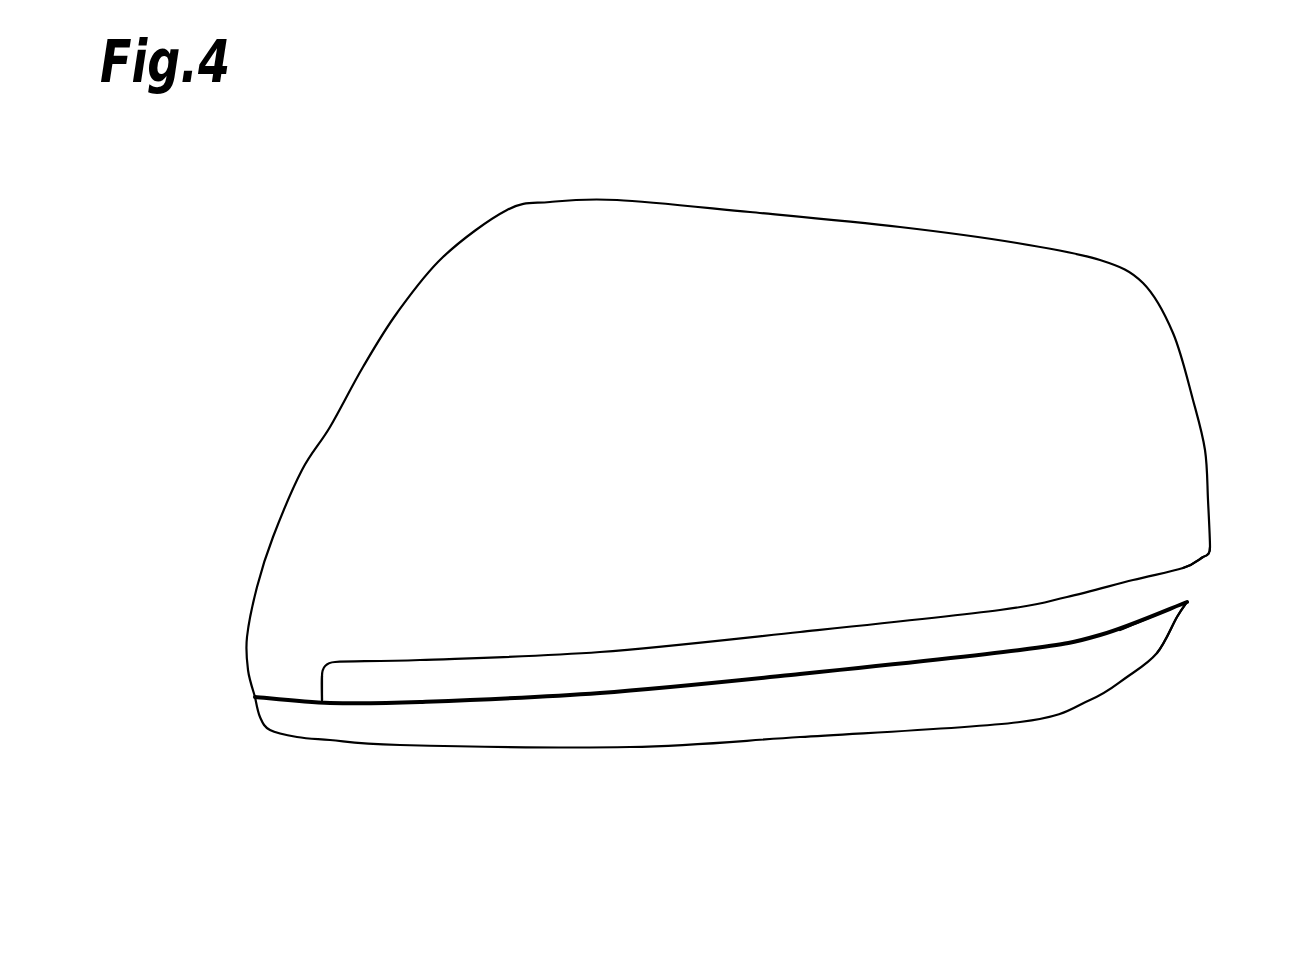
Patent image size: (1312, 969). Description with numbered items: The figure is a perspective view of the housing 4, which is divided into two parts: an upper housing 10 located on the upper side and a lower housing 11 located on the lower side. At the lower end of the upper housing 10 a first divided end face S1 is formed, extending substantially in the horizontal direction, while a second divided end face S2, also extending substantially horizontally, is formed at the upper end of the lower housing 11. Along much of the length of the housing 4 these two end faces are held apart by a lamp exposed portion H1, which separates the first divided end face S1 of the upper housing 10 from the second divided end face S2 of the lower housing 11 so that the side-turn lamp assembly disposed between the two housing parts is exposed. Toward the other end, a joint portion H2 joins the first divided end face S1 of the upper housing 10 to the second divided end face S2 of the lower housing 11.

The housing 4 is at (721, 483).
The upper housing 10 is at (972, 280).
The lower housing 11 is at (888, 715).
The lamp exposed portion H1 is at (853, 655).
The joint portion H2 is at (295, 695).
The first divided end face S1 is at (1182, 567).
The second divided end face S2 is at (1147, 613).